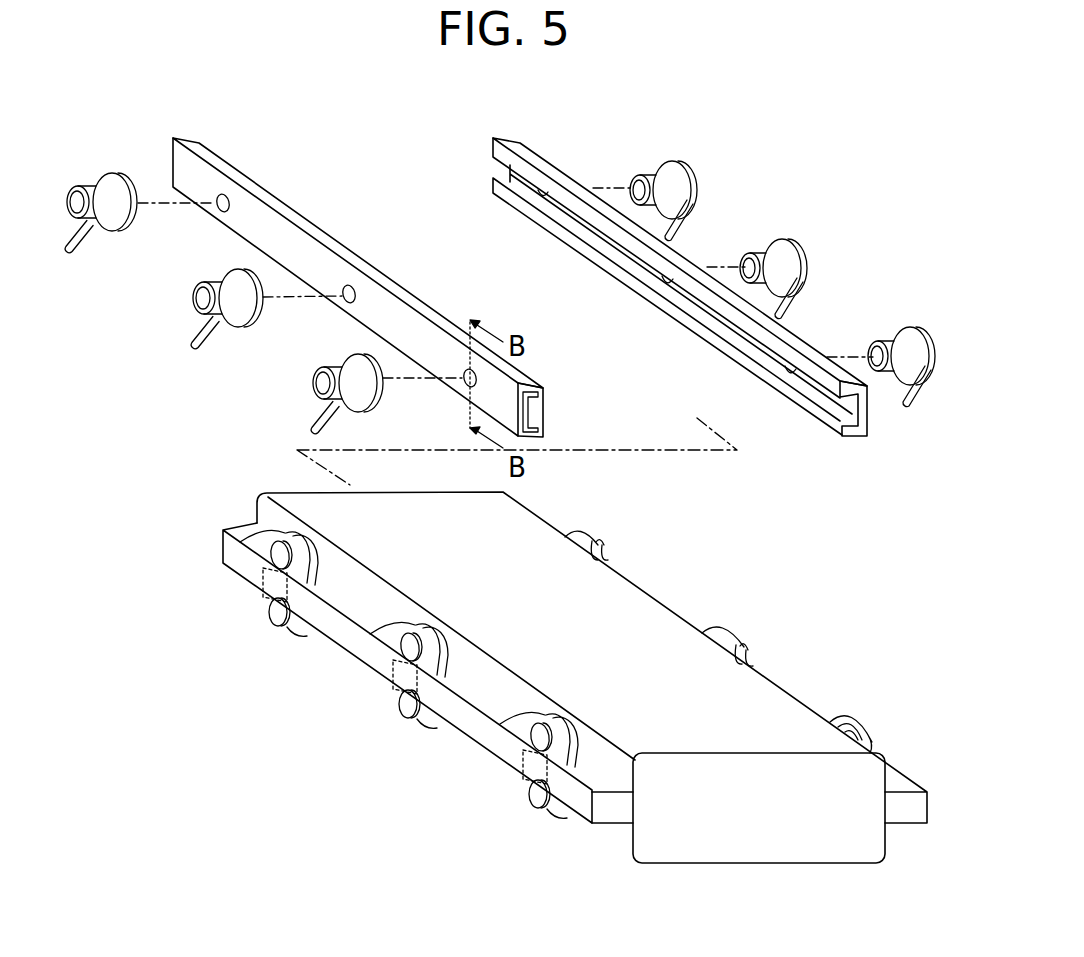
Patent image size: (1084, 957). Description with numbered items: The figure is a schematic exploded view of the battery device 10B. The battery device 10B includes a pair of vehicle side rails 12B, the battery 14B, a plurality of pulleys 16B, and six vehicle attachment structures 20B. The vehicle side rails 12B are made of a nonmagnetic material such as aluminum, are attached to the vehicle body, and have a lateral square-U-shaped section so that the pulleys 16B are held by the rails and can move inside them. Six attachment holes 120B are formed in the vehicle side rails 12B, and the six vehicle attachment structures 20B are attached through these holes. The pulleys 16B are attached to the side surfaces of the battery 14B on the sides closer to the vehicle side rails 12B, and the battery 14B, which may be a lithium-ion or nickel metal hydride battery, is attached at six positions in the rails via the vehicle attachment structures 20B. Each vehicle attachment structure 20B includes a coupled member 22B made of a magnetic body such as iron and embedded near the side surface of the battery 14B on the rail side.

The battery device 10B is at (798, 126).
The vehicle side rail 12B is at (213, 152).
The attachment hole 120B is at (213, 206).
The vehicle attachment structure 20B is at (183, 299).
The battery 14B is at (727, 865).
The pulley 16B is at (396, 706).
The coupled member 22B is at (418, 720).